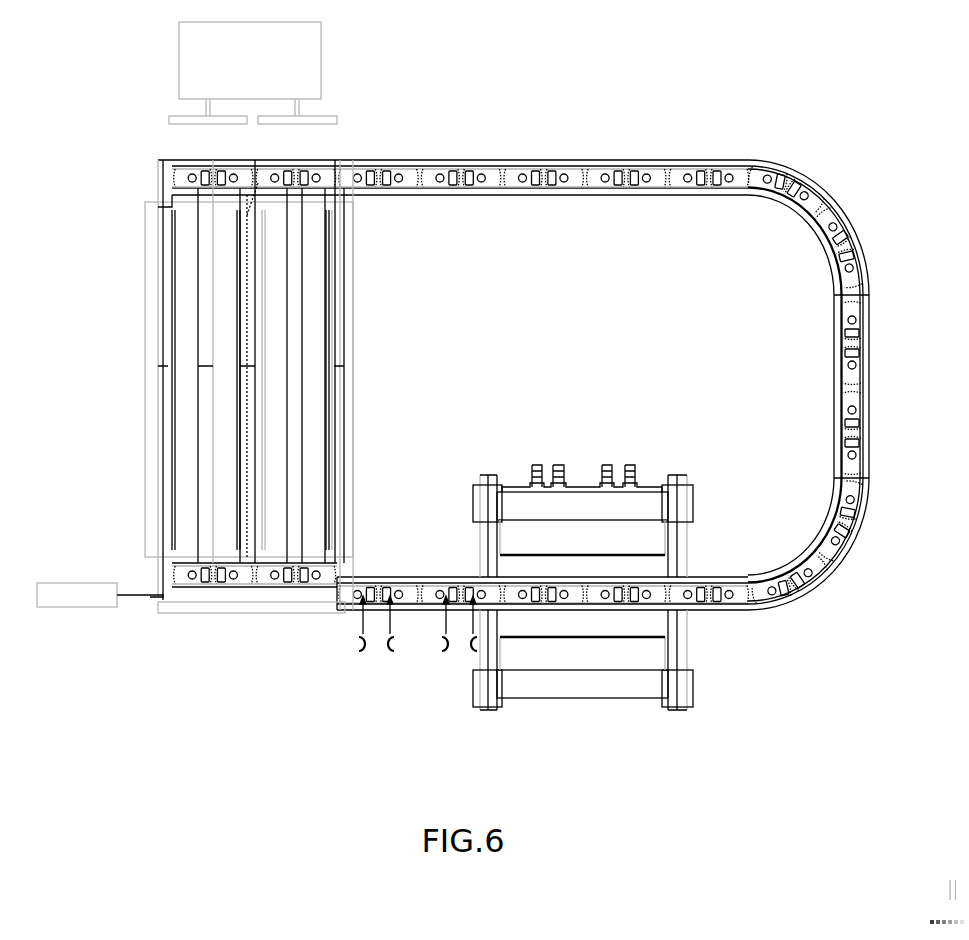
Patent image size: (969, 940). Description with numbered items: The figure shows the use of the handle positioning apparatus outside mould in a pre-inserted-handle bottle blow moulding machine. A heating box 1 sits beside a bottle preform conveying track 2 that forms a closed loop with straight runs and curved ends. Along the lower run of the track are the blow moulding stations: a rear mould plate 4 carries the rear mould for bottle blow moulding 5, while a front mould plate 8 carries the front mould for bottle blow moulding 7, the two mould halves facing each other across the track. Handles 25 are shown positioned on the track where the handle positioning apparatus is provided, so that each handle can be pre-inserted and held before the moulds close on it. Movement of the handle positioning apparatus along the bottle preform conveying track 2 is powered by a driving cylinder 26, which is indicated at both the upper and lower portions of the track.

The heating box 1 is at (157, 443).
The bottle preform conveying track 2 is at (657, 162).
The rear mould plate 4 is at (530, 693).
The rear mould for bottle blow moulding 5 is at (645, 657).
The front mould for bottle blow moulding 7 is at (621, 545).
The front mould plate 8 is at (530, 503).
The handle 25 is at (385, 655).
The driving cylinder 26 is at (187, 315).